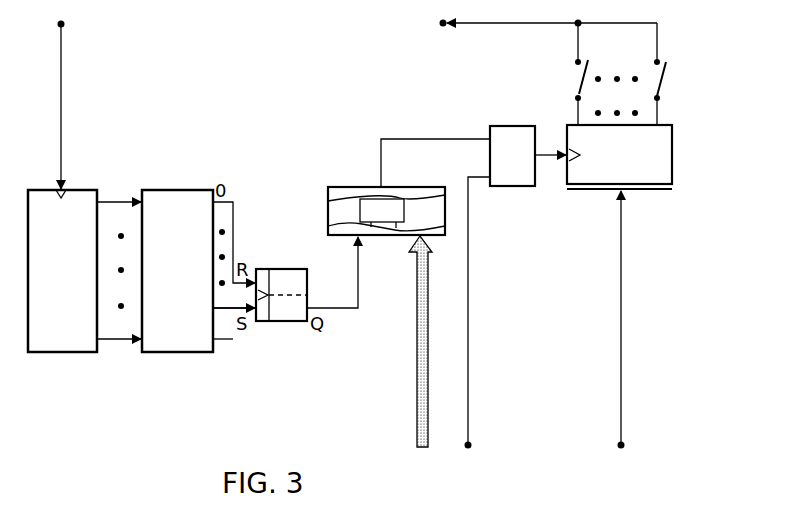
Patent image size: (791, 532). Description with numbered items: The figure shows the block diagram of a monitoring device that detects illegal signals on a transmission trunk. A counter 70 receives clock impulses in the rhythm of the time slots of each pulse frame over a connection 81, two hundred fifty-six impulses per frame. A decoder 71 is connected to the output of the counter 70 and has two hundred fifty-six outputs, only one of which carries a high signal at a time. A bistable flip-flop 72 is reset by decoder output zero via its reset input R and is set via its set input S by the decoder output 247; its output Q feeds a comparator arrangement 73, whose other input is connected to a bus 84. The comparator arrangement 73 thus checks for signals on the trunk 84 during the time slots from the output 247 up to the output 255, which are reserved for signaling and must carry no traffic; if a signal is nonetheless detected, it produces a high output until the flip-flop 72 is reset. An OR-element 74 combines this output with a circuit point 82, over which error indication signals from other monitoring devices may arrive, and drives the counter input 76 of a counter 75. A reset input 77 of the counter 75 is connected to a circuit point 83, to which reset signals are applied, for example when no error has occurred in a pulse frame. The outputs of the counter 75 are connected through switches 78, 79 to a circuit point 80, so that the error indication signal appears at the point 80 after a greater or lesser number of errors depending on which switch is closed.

The counter 70 is at (86, 190).
The decoder 71 is at (174, 190).
The bistable flip-flop 72 is at (279, 269).
The comparator arrangement 73 is at (340, 186).
The OR-element 74 is at (518, 176).
The counter 75 is at (666, 164).
The counter input 76 is at (565, 160).
The reset input 77 is at (624, 196).
The switch 78 is at (576, 74).
The switch 79 is at (667, 84).
The circuit point 80 is at (441, 27).
The connection 81 is at (64, 27).
The circuit point 82 is at (471, 442).
The circuit point 83 is at (618, 442).
The bus 84 is at (420, 353).
The decoder output 247 is at (223, 313).
The decoder output 255 is at (226, 346).